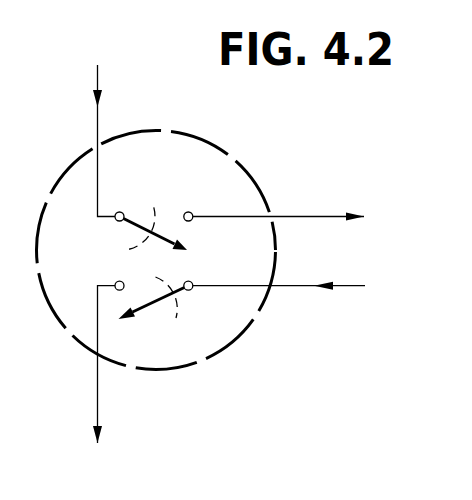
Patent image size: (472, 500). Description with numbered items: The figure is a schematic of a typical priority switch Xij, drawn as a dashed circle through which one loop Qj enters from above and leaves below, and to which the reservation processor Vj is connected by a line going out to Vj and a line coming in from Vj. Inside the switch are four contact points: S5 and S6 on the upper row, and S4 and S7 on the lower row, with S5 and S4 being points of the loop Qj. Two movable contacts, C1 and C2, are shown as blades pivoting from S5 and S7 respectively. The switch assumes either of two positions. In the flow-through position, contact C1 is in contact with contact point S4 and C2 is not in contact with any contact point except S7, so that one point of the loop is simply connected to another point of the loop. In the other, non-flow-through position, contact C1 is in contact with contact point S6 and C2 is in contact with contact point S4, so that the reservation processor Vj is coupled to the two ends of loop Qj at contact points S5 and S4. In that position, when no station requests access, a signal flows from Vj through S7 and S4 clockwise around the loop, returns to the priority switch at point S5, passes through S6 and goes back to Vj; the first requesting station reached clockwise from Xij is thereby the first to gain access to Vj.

The priority switch Xij is at (222, 148).
The loop Qj is at (101, 255).
The reservation processor Vj is at (314, 254).
The contact point S4 is at (120, 275).
The contact point S5 is at (120, 204).
The contact point S6 is at (188, 204).
The contact point S7 is at (188, 275).
The contact C1 is at (165, 232).
The contact C2 is at (152, 311).